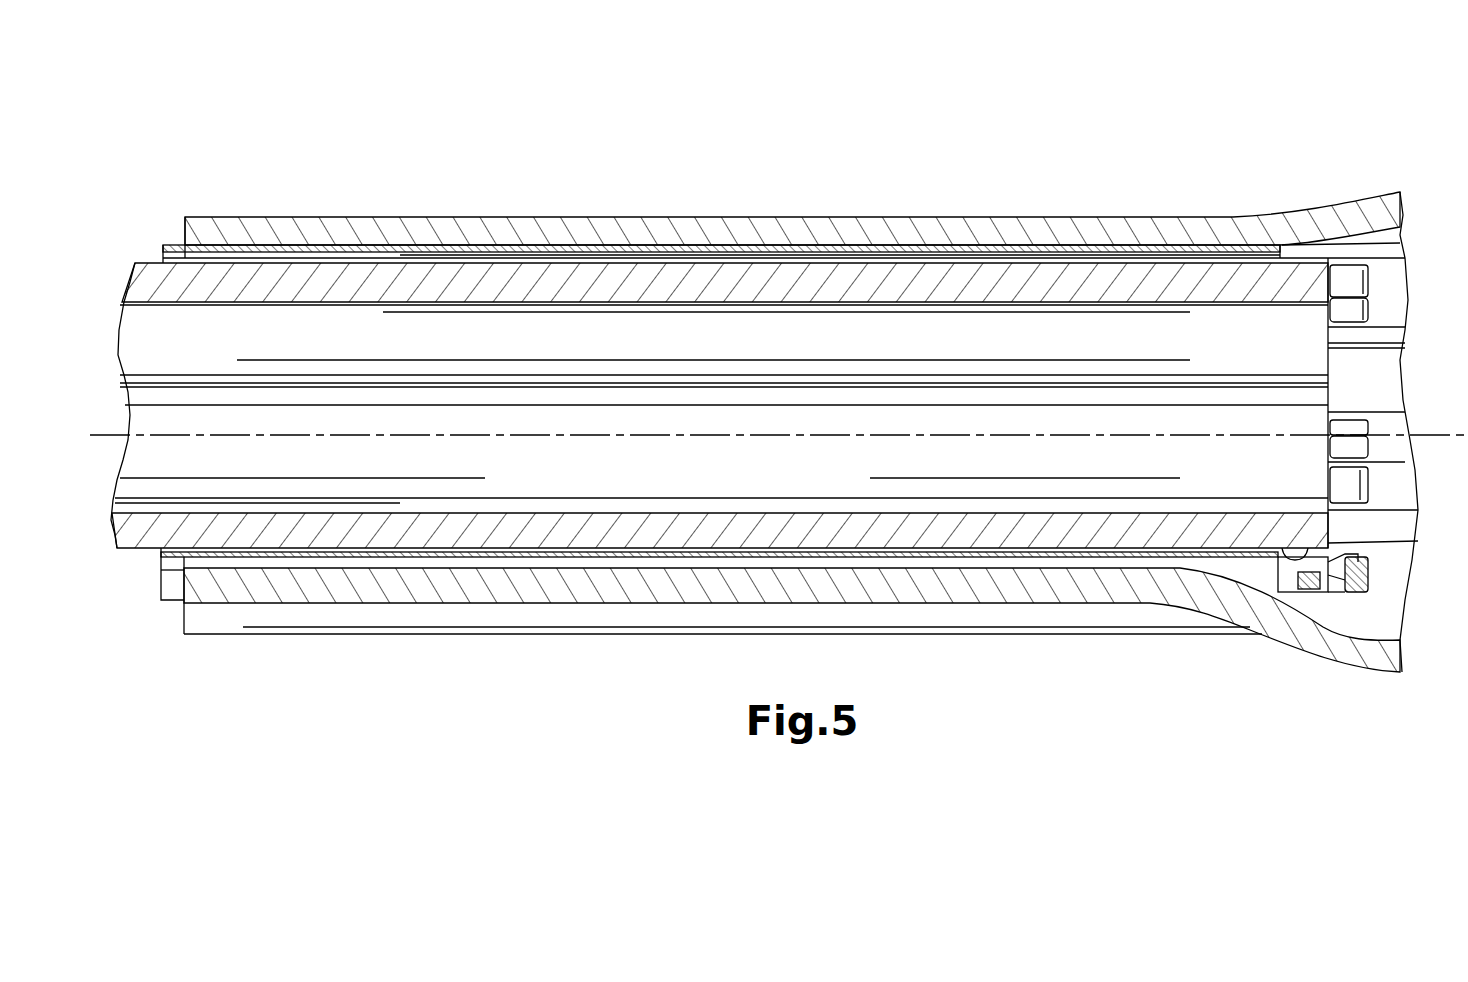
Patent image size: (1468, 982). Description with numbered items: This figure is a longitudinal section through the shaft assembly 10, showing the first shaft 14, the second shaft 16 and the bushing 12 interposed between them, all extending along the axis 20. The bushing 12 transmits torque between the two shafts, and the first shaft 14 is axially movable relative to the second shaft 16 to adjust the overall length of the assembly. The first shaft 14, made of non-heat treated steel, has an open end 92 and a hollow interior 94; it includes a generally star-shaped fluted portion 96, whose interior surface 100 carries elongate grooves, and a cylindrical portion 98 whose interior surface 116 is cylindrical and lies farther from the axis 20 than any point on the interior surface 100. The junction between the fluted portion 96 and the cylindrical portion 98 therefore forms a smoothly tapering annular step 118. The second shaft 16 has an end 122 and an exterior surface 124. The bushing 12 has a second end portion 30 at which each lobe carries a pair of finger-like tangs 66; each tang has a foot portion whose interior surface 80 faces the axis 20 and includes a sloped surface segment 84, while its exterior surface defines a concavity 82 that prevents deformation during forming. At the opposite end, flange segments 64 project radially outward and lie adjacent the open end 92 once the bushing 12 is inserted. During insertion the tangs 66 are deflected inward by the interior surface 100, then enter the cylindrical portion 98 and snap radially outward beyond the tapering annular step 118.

The shaft assembly 10 is at (743, 130).
The bushing 12 is at (168, 242).
The first shaft 14 is at (219, 214).
The second shaft 16 is at (124, 276).
The axis 20 is at (653, 434).
The second end portion 30 is at (1373, 604).
The flange segments 64 is at (176, 590).
The tangs 66 is at (1377, 320).
The interior surface 80 is at (1350, 318).
The concavity 82 is at (1347, 593).
The sloped surface segment 84 is at (1335, 553).
The open end 92 is at (185, 217).
The hollow interior 94 is at (1381, 494).
The fluted portion 96 is at (836, 226).
The cylindrical portion 98 is at (1402, 192).
The interior surface 100 is at (900, 258).
The interior surface 116 is at (1375, 245).
The tapering annular step 118 is at (1282, 228).
The end 122 is at (1332, 531).
The exterior surface 124 is at (1290, 542).